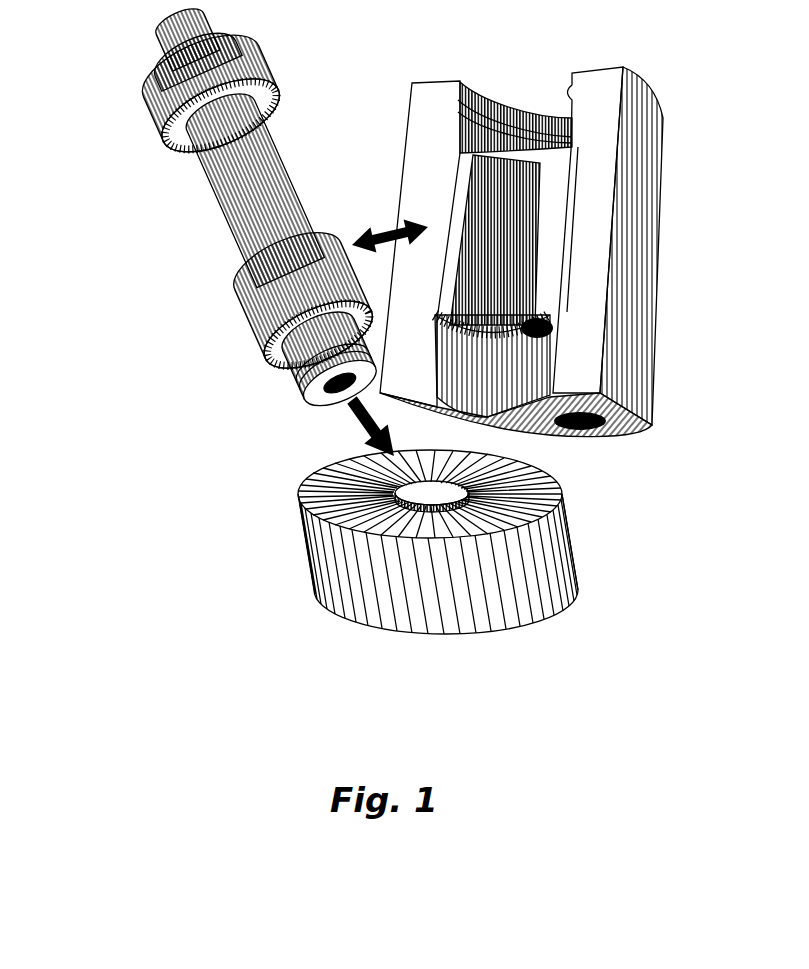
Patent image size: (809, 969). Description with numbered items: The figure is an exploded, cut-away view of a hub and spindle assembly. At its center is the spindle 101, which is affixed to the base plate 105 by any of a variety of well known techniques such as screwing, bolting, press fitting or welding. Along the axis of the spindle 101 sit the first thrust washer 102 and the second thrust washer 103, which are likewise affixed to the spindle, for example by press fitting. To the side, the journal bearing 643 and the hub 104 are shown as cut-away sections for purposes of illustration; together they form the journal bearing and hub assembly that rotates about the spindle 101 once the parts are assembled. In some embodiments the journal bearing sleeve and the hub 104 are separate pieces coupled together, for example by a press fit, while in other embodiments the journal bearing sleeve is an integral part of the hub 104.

The spindle 101 is at (230, 205).
The first thrust washer 102 is at (176, 103).
The second thrust washer 103 is at (252, 302).
The hub 104 is at (608, 223).
The journal bearing 643 is at (563, 173).
The base plate 105 is at (395, 582).